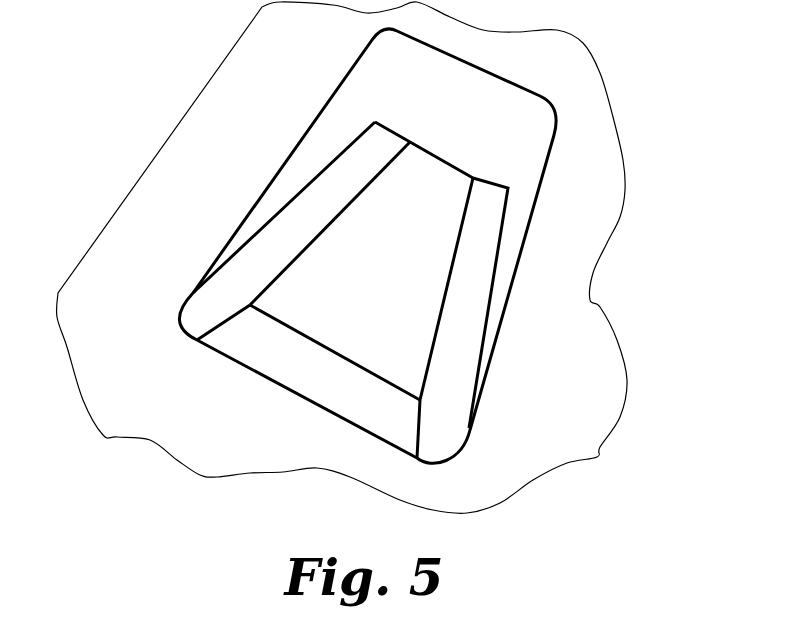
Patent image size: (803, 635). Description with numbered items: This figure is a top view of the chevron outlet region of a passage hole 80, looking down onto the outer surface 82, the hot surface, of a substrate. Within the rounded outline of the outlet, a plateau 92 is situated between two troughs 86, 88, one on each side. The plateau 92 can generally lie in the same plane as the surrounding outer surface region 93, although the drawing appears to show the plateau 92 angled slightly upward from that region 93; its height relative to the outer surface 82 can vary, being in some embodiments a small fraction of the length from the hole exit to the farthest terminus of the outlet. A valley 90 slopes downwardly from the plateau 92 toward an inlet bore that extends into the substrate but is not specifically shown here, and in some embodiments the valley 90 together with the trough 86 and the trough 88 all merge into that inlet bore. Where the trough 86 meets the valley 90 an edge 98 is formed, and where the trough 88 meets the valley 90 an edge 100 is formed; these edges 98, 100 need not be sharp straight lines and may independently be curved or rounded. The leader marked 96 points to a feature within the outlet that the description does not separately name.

The passage hole 80 is at (338, 267).
The outer surface 82 is at (557, 310).
The trough 86 is at (277, 243).
The trough 88 is at (449, 352).
The valley 90 is at (337, 305).
The plateau 92 is at (348, 408).
The outer surface region 93 is at (255, 426).
The opening edge 96 is at (438, 217).
The edge 98 is at (342, 213).
The edge 100 is at (430, 373).